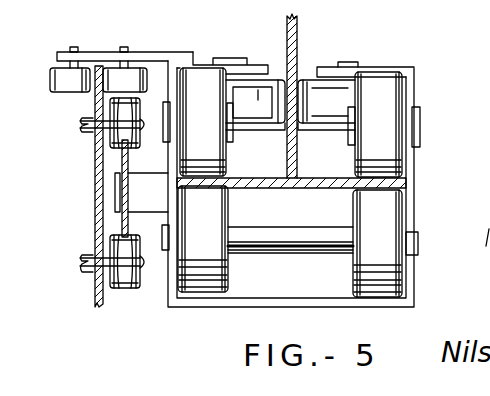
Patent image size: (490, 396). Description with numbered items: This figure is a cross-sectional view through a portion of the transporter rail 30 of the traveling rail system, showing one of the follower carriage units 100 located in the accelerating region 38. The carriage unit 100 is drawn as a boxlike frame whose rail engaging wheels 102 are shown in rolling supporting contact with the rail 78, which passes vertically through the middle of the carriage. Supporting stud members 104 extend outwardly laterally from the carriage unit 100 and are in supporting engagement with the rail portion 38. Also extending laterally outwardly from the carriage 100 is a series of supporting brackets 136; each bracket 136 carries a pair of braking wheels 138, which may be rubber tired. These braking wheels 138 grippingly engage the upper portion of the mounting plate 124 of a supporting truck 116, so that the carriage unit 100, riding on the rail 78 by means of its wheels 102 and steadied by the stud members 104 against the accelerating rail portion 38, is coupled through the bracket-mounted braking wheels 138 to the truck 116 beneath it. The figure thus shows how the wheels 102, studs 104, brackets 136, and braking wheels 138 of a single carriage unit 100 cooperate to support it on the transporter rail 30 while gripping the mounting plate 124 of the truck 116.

The transporter rail 30 is at (195, 33).
The accelerating region 38 is at (128, 166).
The rail 78 is at (298, 43).
The follower carriage unit 100 is at (415, 82).
The rail engaging wheels 102 is at (270, 147).
The supporting stud members 104 is at (165, 206).
The supporting truck 116 is at (94, 232).
The mounting plate 124 is at (95, 139).
The supporting brackets 136 is at (125, 27).
The braking wheels 138 is at (113, 92).